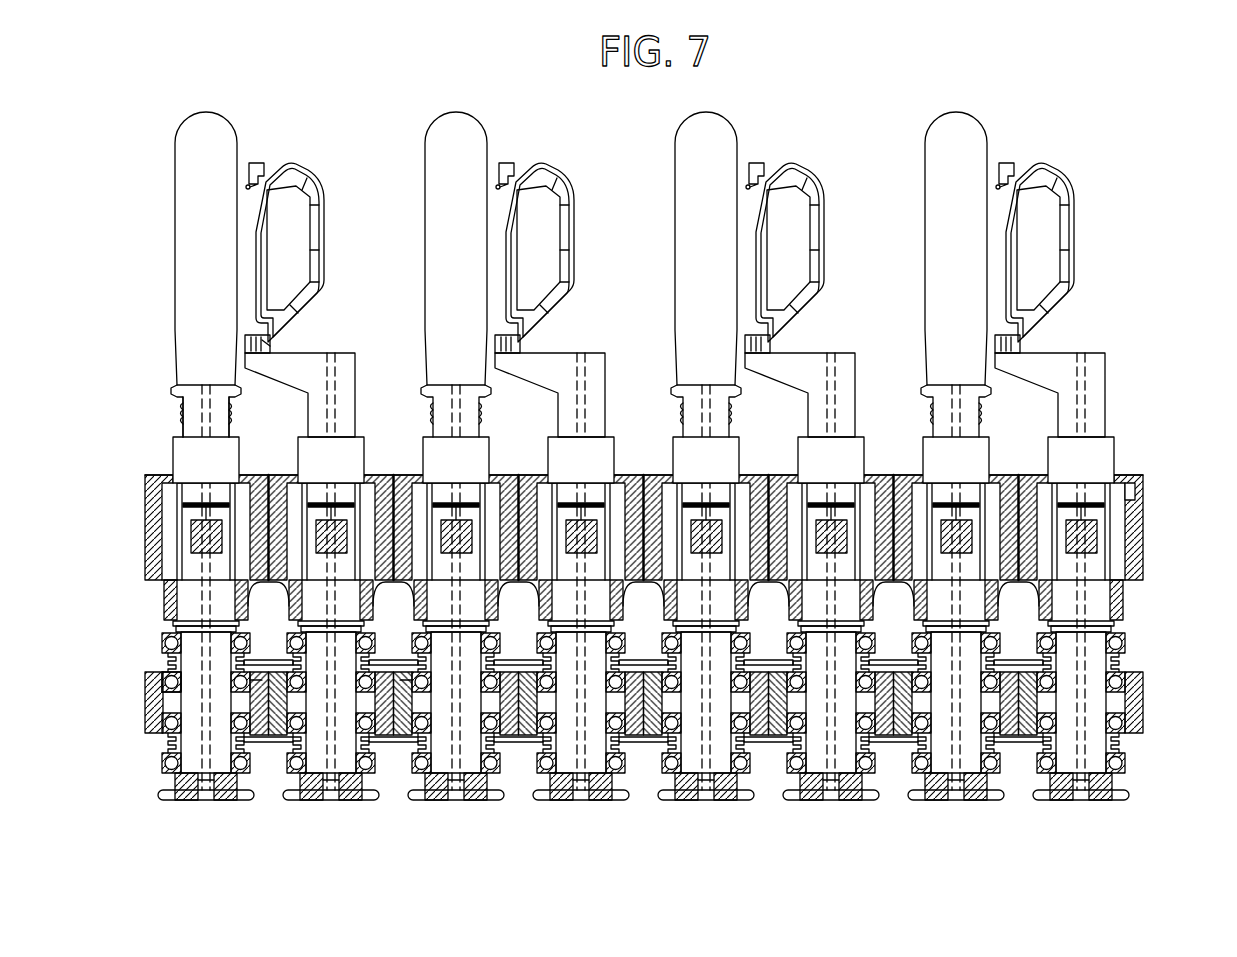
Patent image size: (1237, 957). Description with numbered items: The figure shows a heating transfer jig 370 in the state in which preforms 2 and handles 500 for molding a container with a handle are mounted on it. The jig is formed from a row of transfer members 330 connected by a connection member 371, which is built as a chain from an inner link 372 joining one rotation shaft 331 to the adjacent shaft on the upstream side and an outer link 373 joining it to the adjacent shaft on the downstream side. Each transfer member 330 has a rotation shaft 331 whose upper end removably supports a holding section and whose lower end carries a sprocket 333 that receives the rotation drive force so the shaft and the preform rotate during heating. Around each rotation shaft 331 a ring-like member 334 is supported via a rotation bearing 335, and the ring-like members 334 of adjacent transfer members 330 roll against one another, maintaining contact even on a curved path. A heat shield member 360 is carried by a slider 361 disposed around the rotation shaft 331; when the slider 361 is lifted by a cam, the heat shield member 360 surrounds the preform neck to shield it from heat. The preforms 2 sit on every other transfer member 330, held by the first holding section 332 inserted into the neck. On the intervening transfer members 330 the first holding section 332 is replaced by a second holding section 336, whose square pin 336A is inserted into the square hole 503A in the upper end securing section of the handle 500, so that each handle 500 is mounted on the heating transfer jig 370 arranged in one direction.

The preform 2 is at (177, 243).
The handle 500 is at (324, 215).
The square pin 336A is at (324, 320).
The square hole 503A is at (266, 350).
The second holding section 336 is at (355, 392).
The first holding section 332 is at (217, 418).
The heat shield member 360 is at (158, 478).
The slider 361 is at (158, 522).
The rotation shaft 331 is at (180, 553).
The rotation bearing 335 is at (162, 678).
The ring-like member 334 is at (150, 707).
The transfer member 330 is at (1147, 531).
The sprocket 333 is at (186, 802).
The inner link 372 is at (274, 742).
The outer link 373 is at (396, 742).
The connection member 371 is at (242, 838).
The heating transfer jig 370 is at (749, 808).